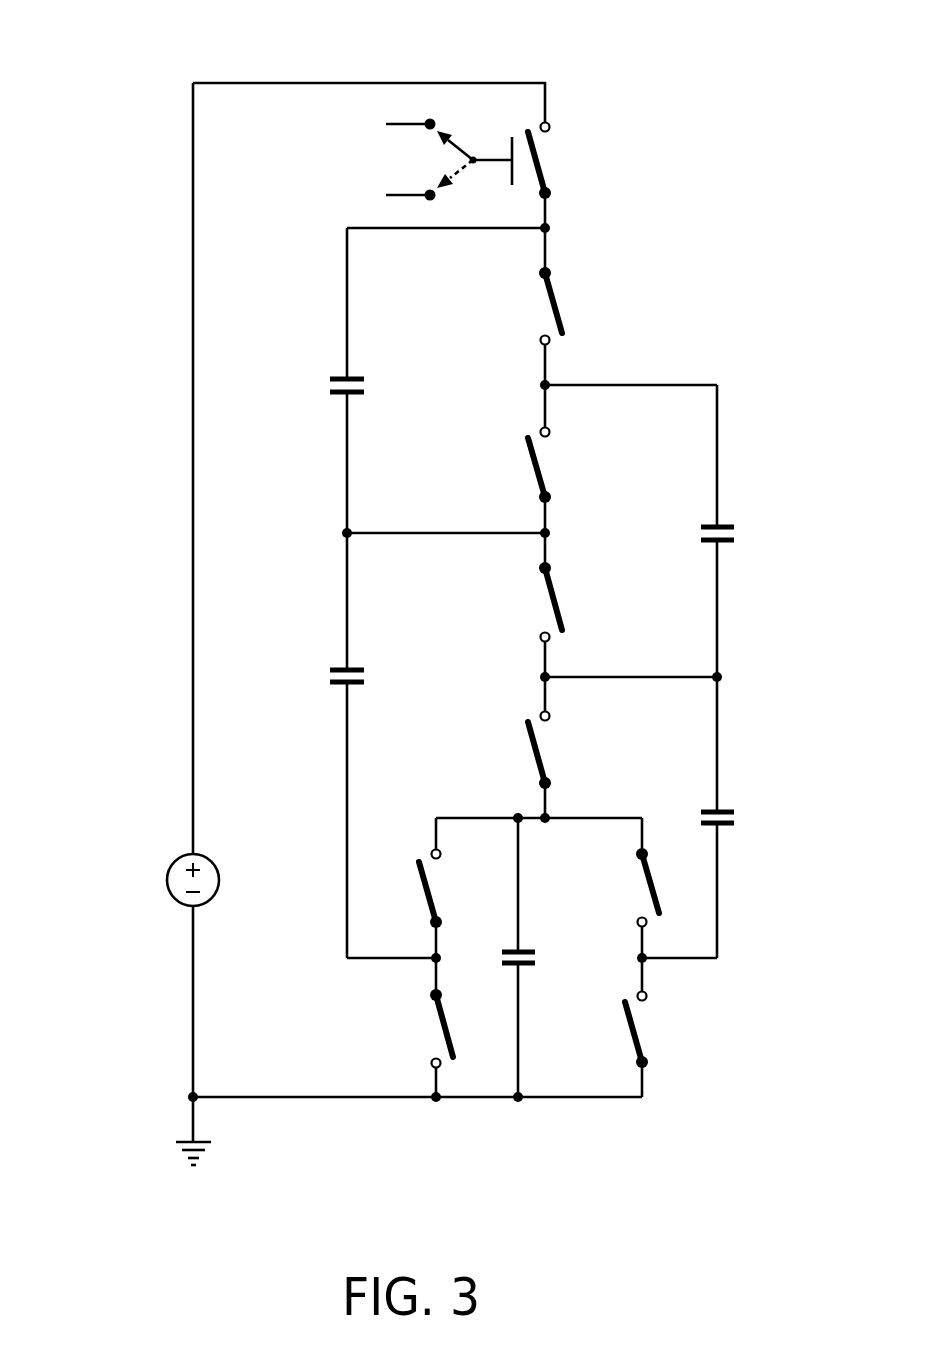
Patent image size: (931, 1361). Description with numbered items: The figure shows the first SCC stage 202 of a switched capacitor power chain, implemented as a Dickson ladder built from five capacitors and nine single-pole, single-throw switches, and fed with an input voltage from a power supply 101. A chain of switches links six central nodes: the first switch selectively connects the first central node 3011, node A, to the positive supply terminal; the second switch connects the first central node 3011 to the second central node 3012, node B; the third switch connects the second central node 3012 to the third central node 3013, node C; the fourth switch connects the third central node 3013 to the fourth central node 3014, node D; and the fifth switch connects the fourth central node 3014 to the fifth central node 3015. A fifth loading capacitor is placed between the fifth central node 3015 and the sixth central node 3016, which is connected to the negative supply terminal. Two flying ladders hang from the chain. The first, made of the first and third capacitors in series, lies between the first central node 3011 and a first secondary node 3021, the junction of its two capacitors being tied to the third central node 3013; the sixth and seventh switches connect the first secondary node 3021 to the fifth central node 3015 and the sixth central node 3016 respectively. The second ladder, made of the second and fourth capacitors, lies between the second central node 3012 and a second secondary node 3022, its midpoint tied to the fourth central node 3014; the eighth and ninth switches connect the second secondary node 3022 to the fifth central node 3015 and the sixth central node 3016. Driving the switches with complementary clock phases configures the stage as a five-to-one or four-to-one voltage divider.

The first SCC stage 202 is at (138, 81).
The power supply 101 is at (167, 880).
The first central node 3011 is at (545, 229).
The second central node 3012 is at (545, 385).
The third central node 3013 is at (545, 534).
The fourth central node 3014 is at (545, 677).
The fifth central node 3015 is at (548, 816).
The sixth central node 3016 is at (518, 1100).
The first secondary node 3021 is at (433, 959).
The second secondary node 3022 is at (646, 959).